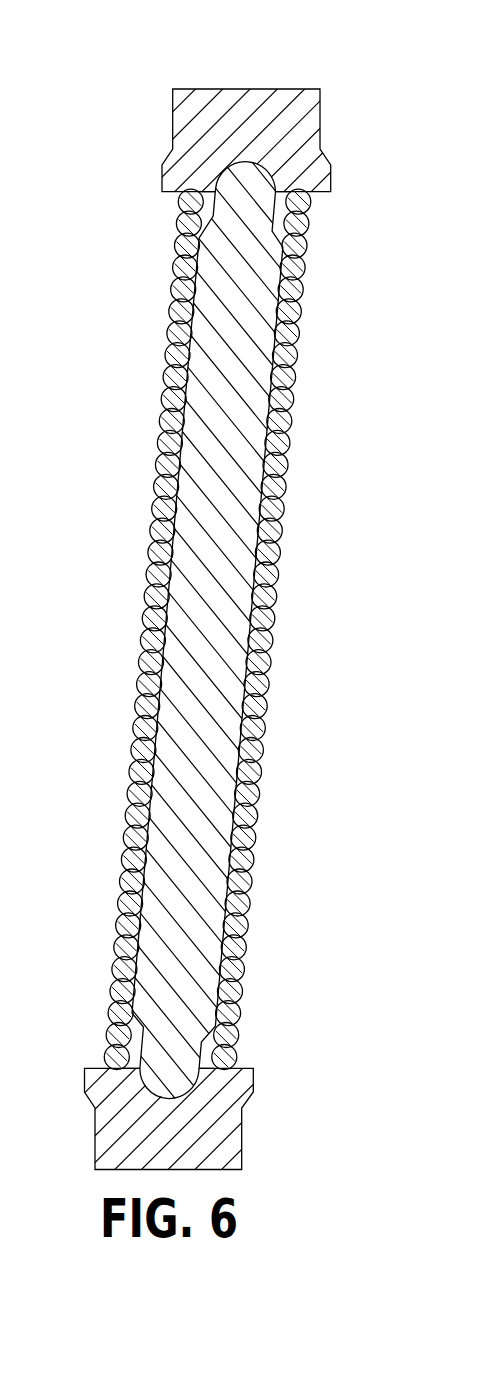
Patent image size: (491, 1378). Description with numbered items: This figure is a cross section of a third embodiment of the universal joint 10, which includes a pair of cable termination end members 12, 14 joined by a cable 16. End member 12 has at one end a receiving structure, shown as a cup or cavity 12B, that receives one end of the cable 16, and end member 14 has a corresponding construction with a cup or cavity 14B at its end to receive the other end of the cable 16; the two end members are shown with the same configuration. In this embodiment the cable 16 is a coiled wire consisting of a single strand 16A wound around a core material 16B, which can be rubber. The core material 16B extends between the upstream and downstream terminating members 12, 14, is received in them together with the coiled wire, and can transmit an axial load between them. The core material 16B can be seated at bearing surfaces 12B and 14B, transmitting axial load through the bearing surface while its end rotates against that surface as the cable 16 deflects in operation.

The universal joint 10 is at (126, 88).
The end member 12 is at (320, 118).
The cup or cavity 12B is at (237, 167).
The end member 14 is at (95, 1140).
The cup or cavity 14B is at (182, 1095).
The cable 16 is at (298, 604).
The single strand 16A is at (260, 797).
The core material 16B is at (228, 645).